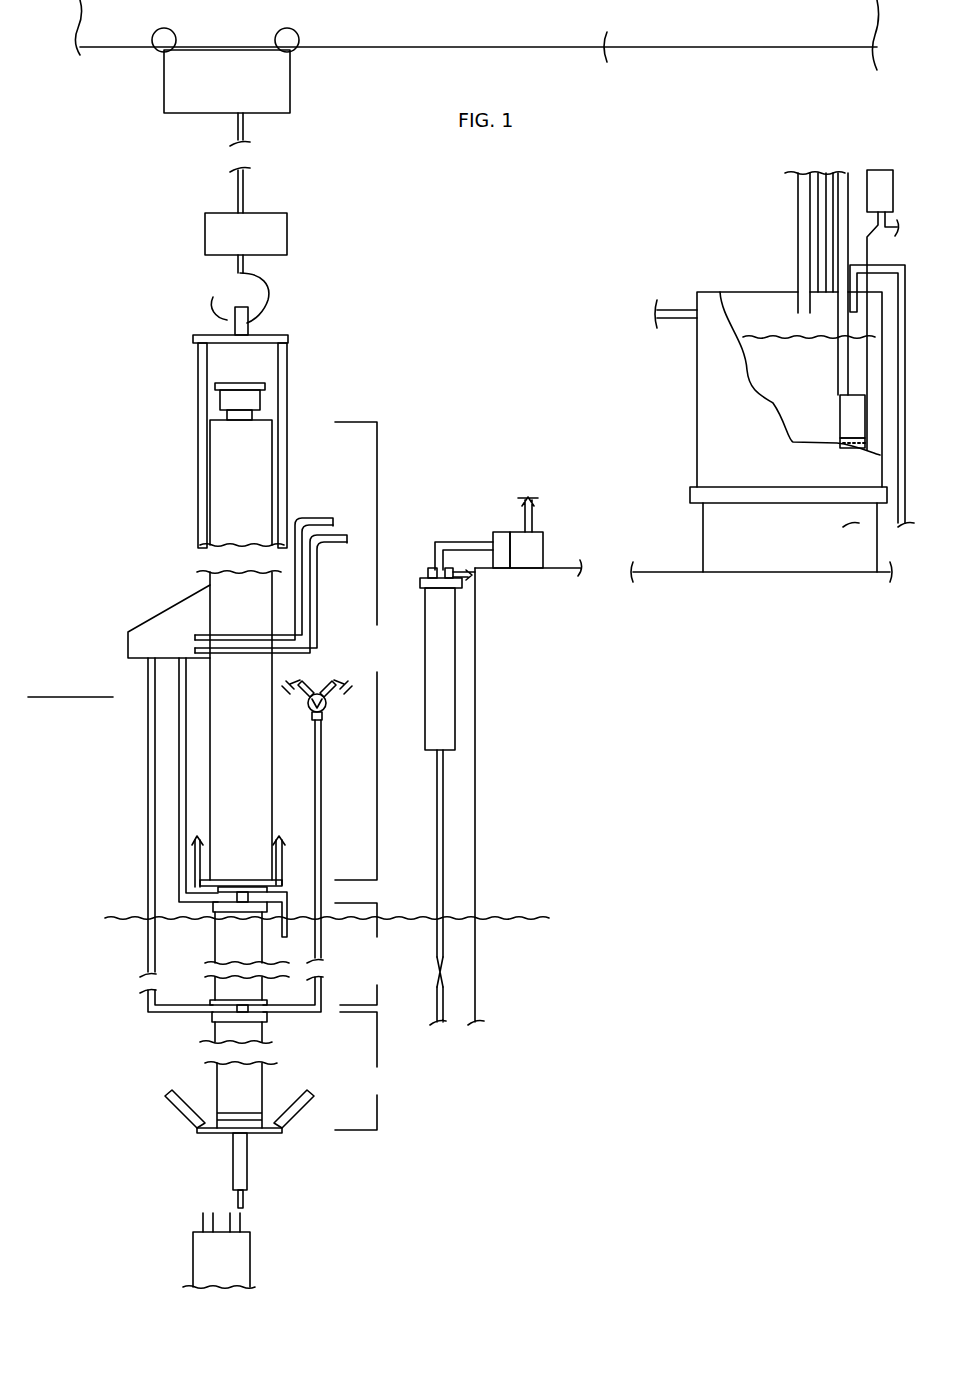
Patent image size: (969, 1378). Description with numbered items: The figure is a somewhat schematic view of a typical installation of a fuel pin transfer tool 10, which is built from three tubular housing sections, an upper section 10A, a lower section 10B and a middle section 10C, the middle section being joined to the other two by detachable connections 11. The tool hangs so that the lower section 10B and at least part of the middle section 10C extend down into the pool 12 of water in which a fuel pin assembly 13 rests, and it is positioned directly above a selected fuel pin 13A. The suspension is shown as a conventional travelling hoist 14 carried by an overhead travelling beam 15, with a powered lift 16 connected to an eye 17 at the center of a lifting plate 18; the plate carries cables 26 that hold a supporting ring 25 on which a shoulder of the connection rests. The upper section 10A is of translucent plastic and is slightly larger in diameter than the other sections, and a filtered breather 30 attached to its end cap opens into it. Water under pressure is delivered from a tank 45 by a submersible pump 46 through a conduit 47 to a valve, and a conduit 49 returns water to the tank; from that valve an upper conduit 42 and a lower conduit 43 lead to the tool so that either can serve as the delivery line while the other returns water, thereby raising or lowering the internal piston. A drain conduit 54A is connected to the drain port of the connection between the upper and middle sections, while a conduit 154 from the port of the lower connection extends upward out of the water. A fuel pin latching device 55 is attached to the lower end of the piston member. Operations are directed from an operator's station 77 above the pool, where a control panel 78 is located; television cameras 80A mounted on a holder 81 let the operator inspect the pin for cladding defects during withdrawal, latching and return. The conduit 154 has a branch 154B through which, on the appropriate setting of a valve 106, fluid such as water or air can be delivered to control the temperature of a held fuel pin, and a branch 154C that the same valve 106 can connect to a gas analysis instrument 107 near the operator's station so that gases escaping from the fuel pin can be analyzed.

The fuel pin transfer tool 10 is at (203, 767).
The upper section 10A is at (366, 651).
The lower section 10B is at (367, 1071).
The middle section 10C is at (369, 954).
The detachable connections 11 is at (292, 889).
The pool 12 is at (407, 912).
The fuel pin assembly 13 is at (262, 1261).
The fuel pin 13A is at (200, 1220).
The travelling hoist 14 is at (290, 100).
The overhead travelling beam 15 is at (476, 46).
The powered lift 16 is at (287, 238).
The eye 17 is at (247, 323).
The lifting plate 18 is at (290, 340).
The supporting ring 25 is at (232, 880).
The cables 26 is at (283, 365).
The filtered breather 30 is at (253, 398).
The upper conduit 42 is at (178, 722).
The lower conduit 43 is at (148, 813).
The tank 45 is at (697, 438).
The submersible pump 46 is at (843, 413).
The conduit 47 is at (320, 517).
The conduit 49 is at (317, 612).
The drain conduit 54A is at (282, 928).
The fuel pin latching device 55 is at (257, 1202).
The operator's station 77 is at (73, 673).
The control panel 78 is at (163, 612).
The television cameras 80A is at (172, 1110).
The holder 81 is at (223, 1133).
The valve 106 is at (307, 720).
The gas analysis instrument 107 is at (512, 530).
The conduit 154 is at (322, 827).
The branch 154B is at (337, 693).
The branch 154C is at (297, 698).